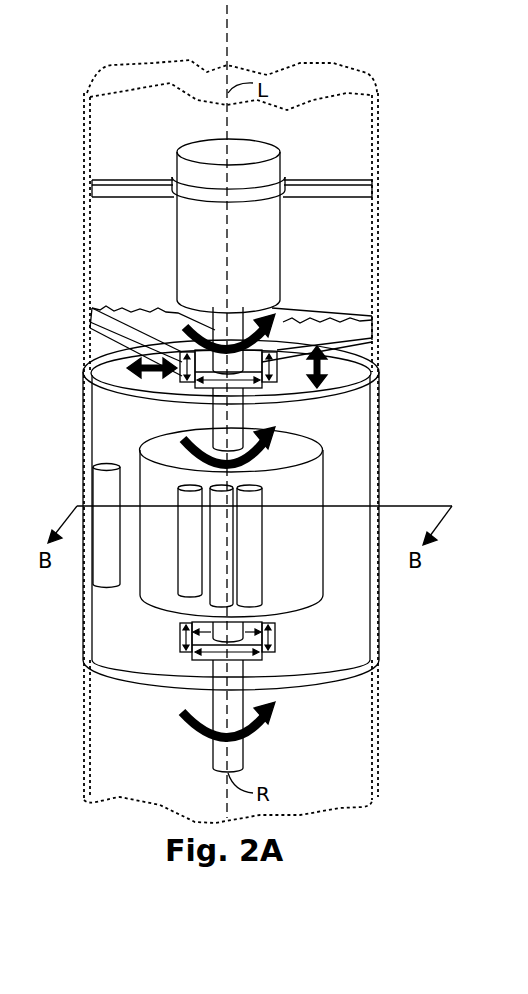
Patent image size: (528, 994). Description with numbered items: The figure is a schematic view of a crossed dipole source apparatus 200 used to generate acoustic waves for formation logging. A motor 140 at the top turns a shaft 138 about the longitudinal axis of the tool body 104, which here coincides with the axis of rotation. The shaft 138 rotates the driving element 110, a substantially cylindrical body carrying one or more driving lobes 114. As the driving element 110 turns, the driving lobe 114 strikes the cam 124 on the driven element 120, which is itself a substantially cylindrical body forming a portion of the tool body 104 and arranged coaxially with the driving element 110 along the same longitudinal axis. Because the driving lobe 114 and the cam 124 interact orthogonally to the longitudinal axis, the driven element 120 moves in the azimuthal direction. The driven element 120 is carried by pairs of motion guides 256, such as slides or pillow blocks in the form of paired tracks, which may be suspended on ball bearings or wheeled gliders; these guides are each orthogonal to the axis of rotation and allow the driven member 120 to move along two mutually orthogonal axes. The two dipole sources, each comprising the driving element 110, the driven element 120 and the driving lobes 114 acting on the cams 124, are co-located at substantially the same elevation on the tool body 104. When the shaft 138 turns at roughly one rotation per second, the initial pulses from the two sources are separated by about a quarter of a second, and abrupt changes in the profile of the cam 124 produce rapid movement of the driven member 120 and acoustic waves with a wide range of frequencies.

The tool body 104 is at (377, 703).
The driving element 110 is at (290, 624).
The driving lobe 114 is at (177, 568).
The driven element 120 is at (390, 655).
The cam 124 is at (102, 463).
The shaft 138 is at (233, 418).
The motor 140 is at (283, 237).
The crossed dipole source apparatus 200 is at (318, 722).
The motion guides 256 is at (250, 358).